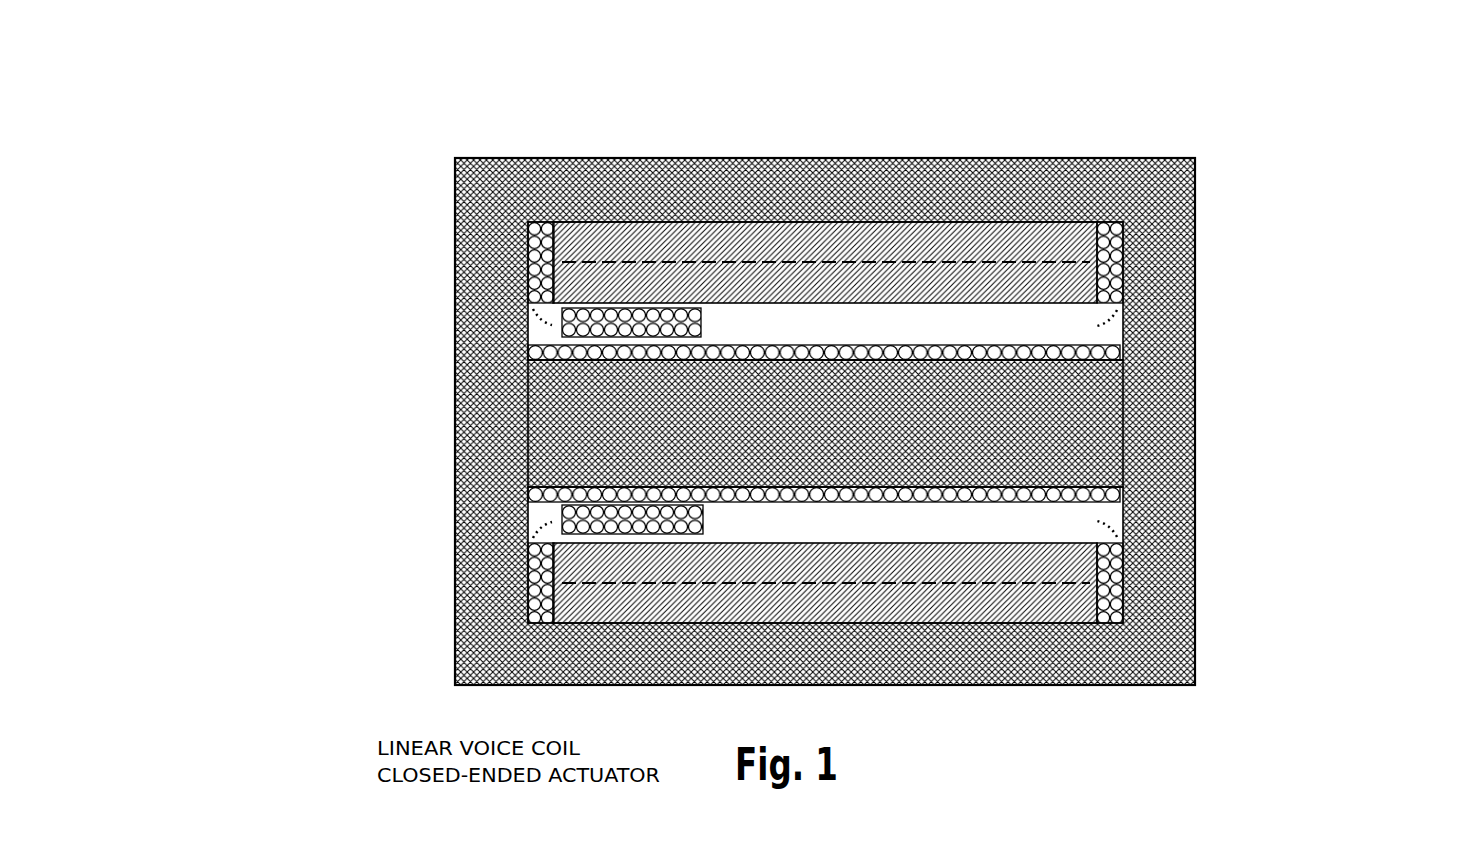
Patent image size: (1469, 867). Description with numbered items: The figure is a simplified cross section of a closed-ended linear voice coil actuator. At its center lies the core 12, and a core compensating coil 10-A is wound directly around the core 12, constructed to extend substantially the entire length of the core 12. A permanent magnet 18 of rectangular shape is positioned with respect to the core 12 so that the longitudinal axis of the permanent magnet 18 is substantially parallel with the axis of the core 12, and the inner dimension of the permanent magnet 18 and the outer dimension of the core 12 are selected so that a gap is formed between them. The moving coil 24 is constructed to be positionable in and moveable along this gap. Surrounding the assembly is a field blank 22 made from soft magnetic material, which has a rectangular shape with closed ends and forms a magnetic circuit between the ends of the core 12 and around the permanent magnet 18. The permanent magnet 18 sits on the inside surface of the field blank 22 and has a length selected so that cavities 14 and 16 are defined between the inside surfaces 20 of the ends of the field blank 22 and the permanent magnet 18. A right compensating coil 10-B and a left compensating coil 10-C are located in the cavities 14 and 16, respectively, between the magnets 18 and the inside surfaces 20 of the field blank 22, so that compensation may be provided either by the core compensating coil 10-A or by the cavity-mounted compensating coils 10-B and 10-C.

The core compensating coil 10-A is at (946, 480).
The right compensating coil 10-B is at (1140, 566).
The left compensating coil 10-C is at (527, 257).
The core 12 is at (1055, 460).
The cavity 14 is at (1111, 180).
The cavity 16 is at (541, 178).
The permanent magnet 18 is at (765, 222).
The inside surfaces of the field blank 20 is at (512, 228).
The field blank 22 is at (1057, 160).
The moving coil 24 is at (549, 336).